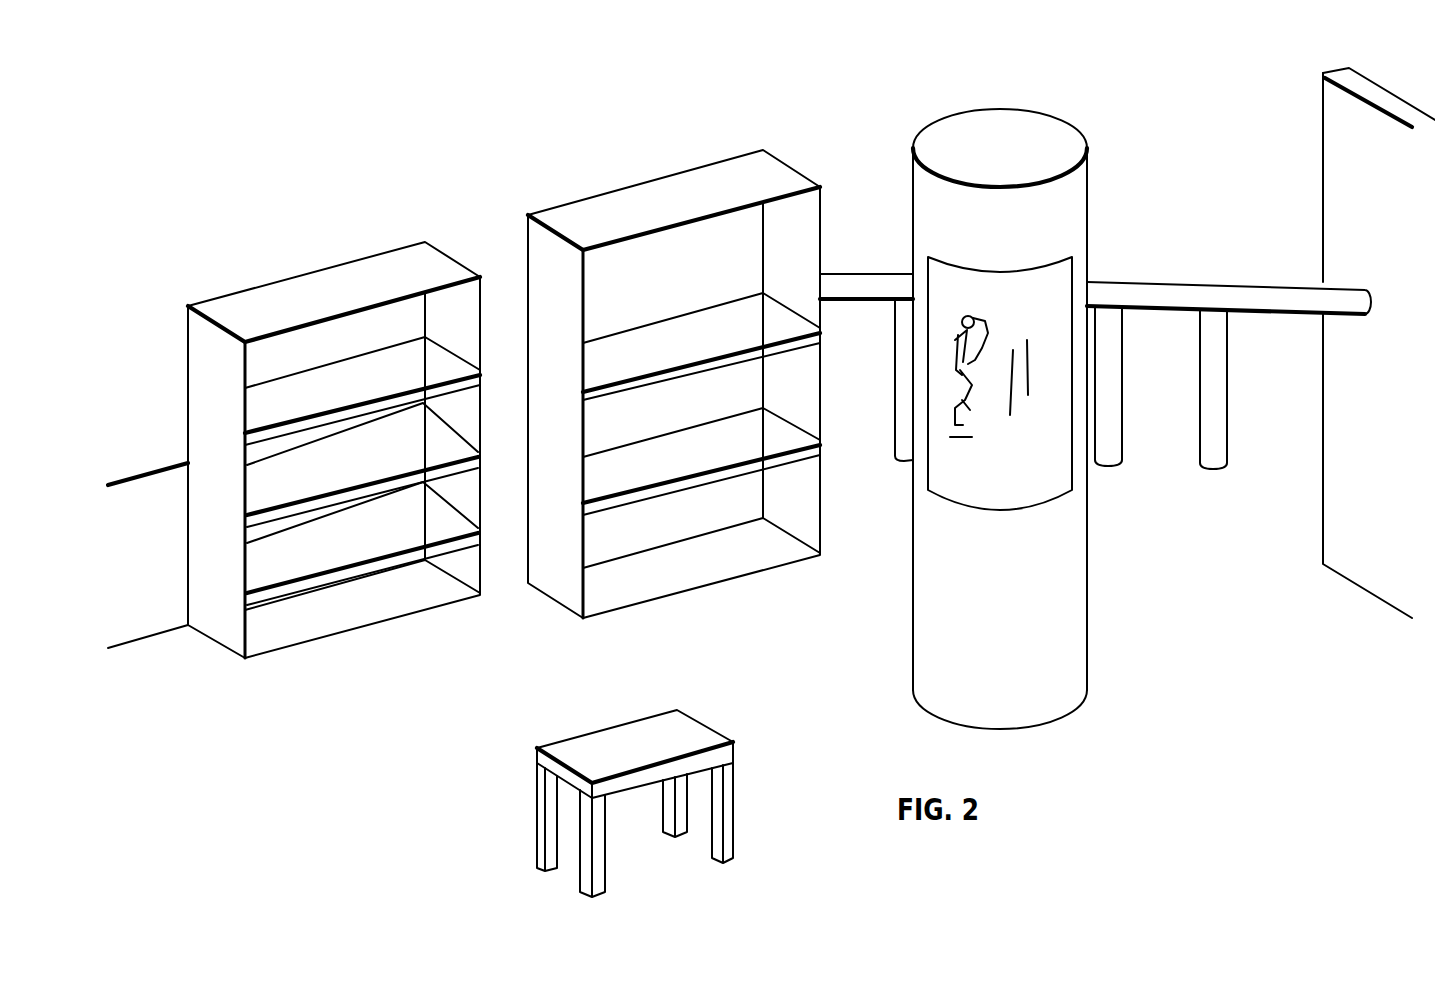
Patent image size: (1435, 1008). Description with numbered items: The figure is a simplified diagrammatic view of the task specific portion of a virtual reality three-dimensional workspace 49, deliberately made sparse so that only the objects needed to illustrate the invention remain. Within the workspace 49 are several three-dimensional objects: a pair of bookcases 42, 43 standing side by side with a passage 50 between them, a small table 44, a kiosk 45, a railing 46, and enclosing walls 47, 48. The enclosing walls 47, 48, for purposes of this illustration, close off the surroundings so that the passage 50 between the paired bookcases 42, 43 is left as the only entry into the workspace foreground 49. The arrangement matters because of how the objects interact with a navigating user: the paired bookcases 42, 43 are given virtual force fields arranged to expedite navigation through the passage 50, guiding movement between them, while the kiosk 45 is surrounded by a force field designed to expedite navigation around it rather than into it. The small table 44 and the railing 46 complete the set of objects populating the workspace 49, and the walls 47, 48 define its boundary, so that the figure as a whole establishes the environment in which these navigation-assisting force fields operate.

The bookcase 42 is at (357, 273).
The bookcase 43 is at (607, 208).
The small table 44 is at (604, 750).
The kiosk 45 is at (1073, 203).
The railing 46 is at (1172, 291).
The enclosing wall 47 is at (1328, 136).
The enclosing wall 48 is at (138, 493).
The workspace 49 is at (838, 597).
The passage 50 is at (495, 272).